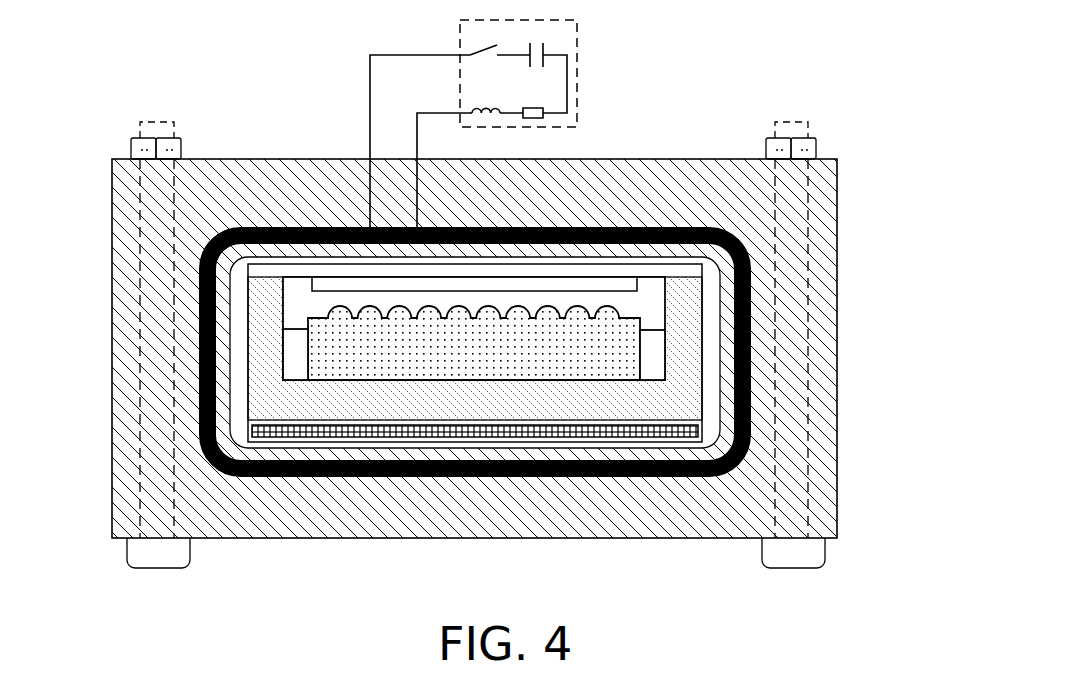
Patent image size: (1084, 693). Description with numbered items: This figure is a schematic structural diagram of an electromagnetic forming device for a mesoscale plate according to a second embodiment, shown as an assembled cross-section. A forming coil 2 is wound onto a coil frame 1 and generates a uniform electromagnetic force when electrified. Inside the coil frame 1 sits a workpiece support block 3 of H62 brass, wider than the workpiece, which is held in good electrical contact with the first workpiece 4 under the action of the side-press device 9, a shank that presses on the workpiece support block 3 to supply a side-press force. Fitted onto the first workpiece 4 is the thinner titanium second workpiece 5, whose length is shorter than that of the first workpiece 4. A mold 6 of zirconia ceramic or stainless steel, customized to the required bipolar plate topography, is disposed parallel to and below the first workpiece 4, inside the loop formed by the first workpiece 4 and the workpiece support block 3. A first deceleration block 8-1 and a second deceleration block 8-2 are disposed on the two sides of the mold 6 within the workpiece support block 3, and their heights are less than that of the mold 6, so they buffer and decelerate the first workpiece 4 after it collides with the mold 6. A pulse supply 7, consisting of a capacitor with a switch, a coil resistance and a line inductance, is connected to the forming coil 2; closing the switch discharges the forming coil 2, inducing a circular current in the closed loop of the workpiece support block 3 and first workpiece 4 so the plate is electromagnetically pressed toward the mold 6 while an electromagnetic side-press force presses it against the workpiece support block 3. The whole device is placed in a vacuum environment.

The coil frame 1 is at (823, 518).
The forming coil 2 is at (738, 462).
The workpiece support block 3 is at (678, 395).
The first workpiece 4 is at (688, 272).
The cover plate 5 is at (627, 284).
The mold 6 is at (617, 314).
The pulse supply 7 is at (577, 63).
The first deceleration block 8-1 is at (653, 355).
The second deceleration block 8-2 is at (293, 345).
The side-press device 9 is at (690, 430).